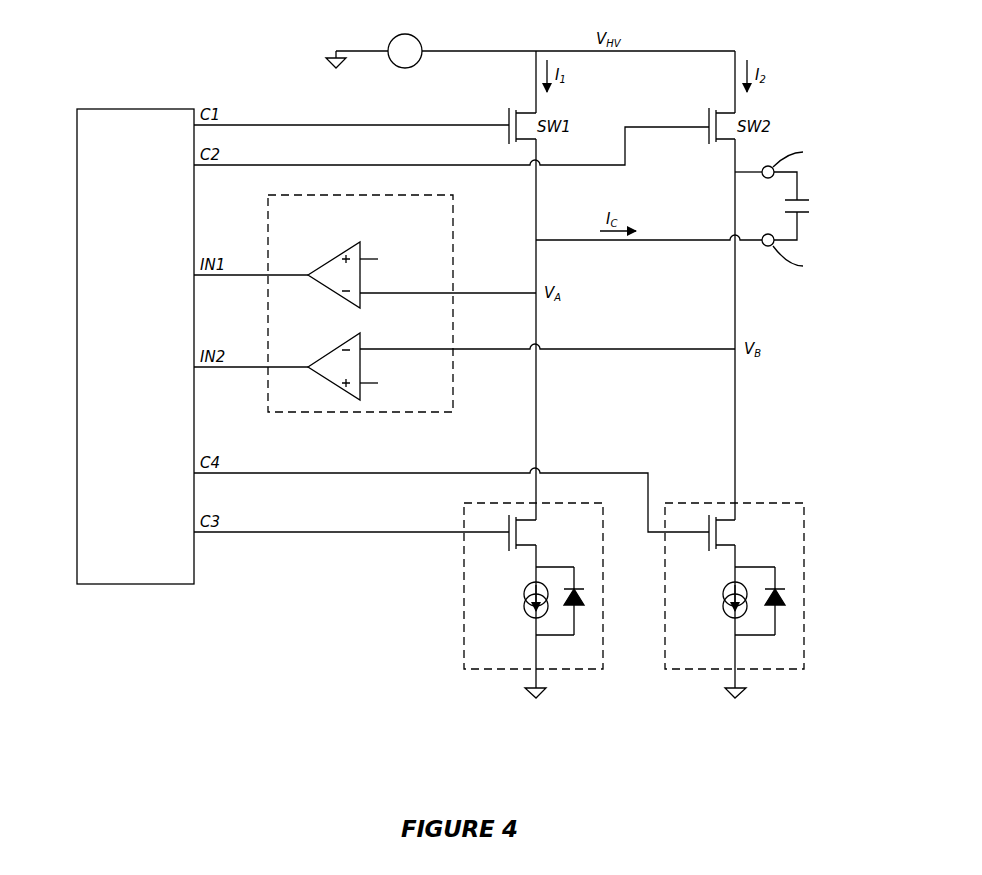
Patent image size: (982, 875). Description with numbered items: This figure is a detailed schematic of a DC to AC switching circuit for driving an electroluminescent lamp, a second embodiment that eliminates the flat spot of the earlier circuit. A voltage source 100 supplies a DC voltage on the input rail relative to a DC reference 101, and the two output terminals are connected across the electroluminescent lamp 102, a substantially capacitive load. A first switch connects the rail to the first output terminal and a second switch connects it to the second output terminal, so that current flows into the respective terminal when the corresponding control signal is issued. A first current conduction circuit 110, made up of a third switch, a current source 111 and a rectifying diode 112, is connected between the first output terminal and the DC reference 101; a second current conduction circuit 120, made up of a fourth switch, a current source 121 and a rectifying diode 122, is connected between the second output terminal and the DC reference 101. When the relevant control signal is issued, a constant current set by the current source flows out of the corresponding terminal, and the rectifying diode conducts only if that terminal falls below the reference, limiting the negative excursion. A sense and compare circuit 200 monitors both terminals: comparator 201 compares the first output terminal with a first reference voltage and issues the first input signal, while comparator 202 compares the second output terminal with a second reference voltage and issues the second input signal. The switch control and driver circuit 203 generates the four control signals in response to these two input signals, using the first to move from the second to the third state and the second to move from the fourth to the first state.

The voltage source 100 is at (400, 30).
The DC reference 101 is at (522, 692).
The electroluminescent lamp 102 is at (813, 193).
The first current conduction circuit 110 is at (510, 586).
The current source 111 is at (522, 601).
The rectifying diode 112 is at (580, 612).
The second current conduction circuit 120 is at (758, 586).
The current source 121 is at (722, 601).
The rectifying diode 122 is at (780, 612).
The sense and compare circuit 200 is at (360, 321).
The comparator 201 is at (325, 260).
The comparator 202 is at (325, 352).
The switch control and driver circuit 203 is at (77, 161).